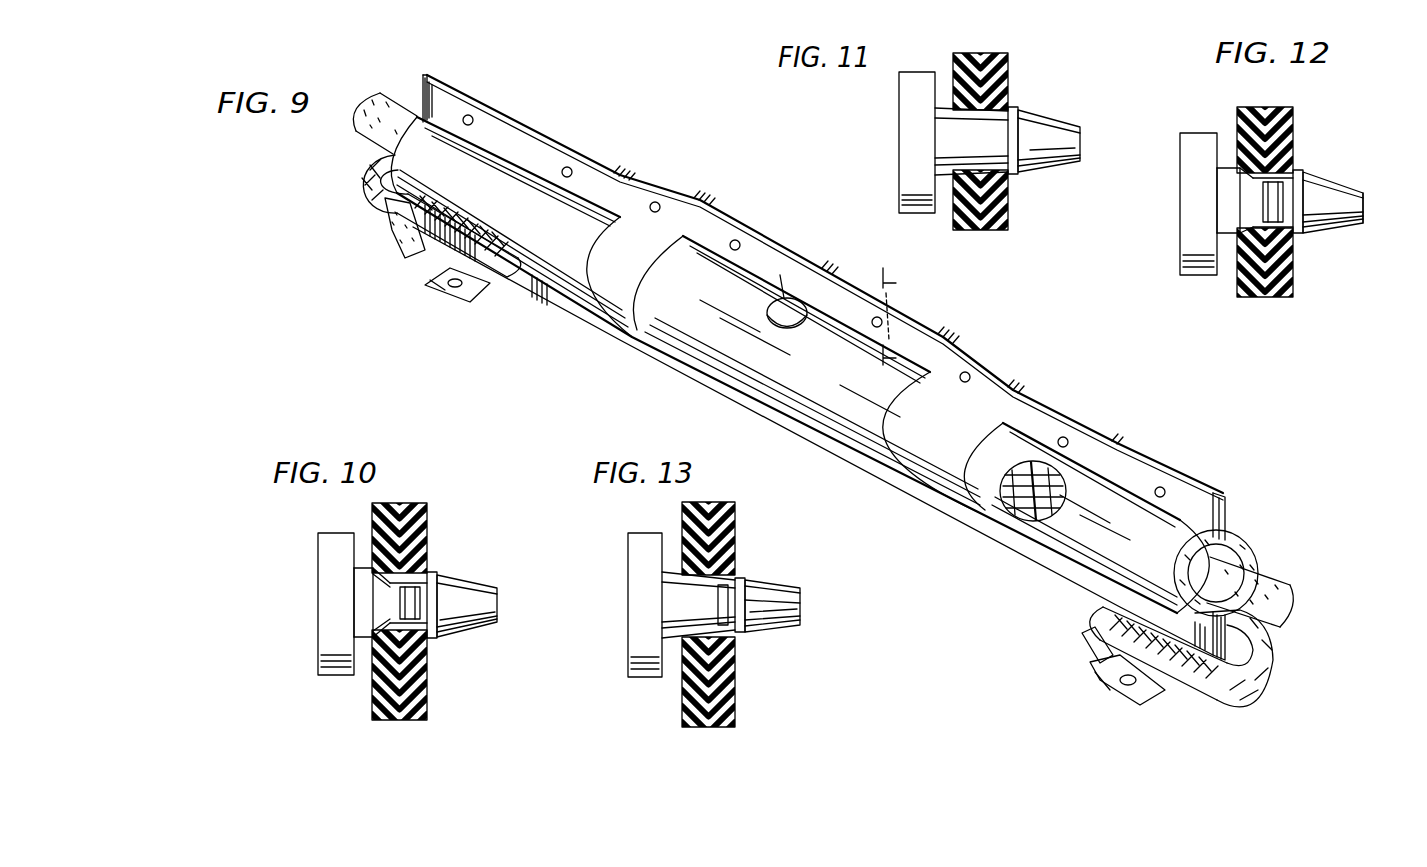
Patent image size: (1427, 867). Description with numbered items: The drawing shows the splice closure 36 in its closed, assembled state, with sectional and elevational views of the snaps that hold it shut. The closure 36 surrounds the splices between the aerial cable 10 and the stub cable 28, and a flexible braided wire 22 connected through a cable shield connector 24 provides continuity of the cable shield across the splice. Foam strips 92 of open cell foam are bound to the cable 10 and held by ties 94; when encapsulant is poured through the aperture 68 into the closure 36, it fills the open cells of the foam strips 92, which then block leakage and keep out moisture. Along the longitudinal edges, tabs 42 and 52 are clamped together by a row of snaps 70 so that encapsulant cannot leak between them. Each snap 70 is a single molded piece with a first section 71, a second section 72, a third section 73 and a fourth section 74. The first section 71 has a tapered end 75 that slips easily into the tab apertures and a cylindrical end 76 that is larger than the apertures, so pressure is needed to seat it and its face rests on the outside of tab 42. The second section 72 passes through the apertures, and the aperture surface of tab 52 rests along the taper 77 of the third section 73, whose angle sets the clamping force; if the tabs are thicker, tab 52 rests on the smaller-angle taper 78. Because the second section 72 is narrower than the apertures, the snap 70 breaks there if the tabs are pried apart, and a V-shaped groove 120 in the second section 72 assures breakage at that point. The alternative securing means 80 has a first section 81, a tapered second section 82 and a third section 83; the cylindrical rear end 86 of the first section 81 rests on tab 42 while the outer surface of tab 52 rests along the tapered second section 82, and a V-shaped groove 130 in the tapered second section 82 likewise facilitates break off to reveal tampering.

In FIG. 9, the cable 10 is at (392, 100).
In FIG. 9, the braided wire 22 is at (508, 280).
In FIG. 9, the cable shield connector 24 is at (430, 285).
In FIG. 9, the stub cable 28 is at (388, 232).
In FIG. 9, the closure 36 is at (677, 348).
In FIG. 11, the tab 42 is at (1010, 72).
In FIG. 12, the tab 42 is at (1292, 122).
In FIG. 10, the tab 42 is at (422, 548).
In FIG. 13, the tab 42 is at (738, 535).
In FIG. 11, the tab 52 is at (953, 75).
In FIG. 12, the tab 52 is at (1240, 120).
In FIG. 10, the tab 52 is at (372, 530).
In FIG. 13, the tab 52 is at (682, 522).
In FIG. 9, the aperture 68 is at (797, 300).
In FIG. 9, the snap 70 is at (473, 116).
In FIG. 12, the snap 70 is at (1415, 215).
In FIG. 10, the snap 70 is at (545, 615).
In FIG. 10, the first section 71 is at (472, 622).
In FIG. 12, the second section 72 is at (1285, 228).
In FIG. 10, the second section 72 is at (420, 625).
In FIG. 12, the third section 73 is at (1235, 235).
In FIG. 10, the third section 73 is at (372, 637).
In FIG. 12, the fourth section 74 is at (1198, 205).
In FIG. 10, the fourth section 74 is at (315, 618).
In FIG. 12, the tapered end 75 is at (1340, 190).
In FIG. 12, the cylindrical end 76 is at (1300, 172).
In FIG. 10, the cylindrical end 76 is at (435, 572).
In FIG. 10, the taper 77 is at (372, 605).
In FIG. 12, the taper 78 is at (1236, 168).
In FIG. 10, the taper 78 is at (360, 587).
In FIG. 11, the securing means 80 is at (1125, 150).
In FIG. 13, the securing means 80 is at (845, 610).
In FIG. 11, the first section 81 is at (1052, 155).
In FIG. 13, the first section 81 is at (775, 618).
In FIG. 11, the second section 82 is at (950, 170).
In FIG. 13, the second section 82 is at (685, 625).
In FIG. 11, the third section 83 is at (898, 188).
In FIG. 13, the third section 83 is at (640, 650).
In FIG. 11, the cylindrical rear end 86 is at (1014, 108).
In FIG. 13, the cylindrical rear end 86 is at (742, 578).
In FIG. 9, the foam strip 92 is at (1233, 540).
In FIG. 9, the ties 94 is at (1036, 520).
In FIG. 12, the groove 120 is at (1325, 215).
In FIG. 13, the groove 130 is at (772, 658).